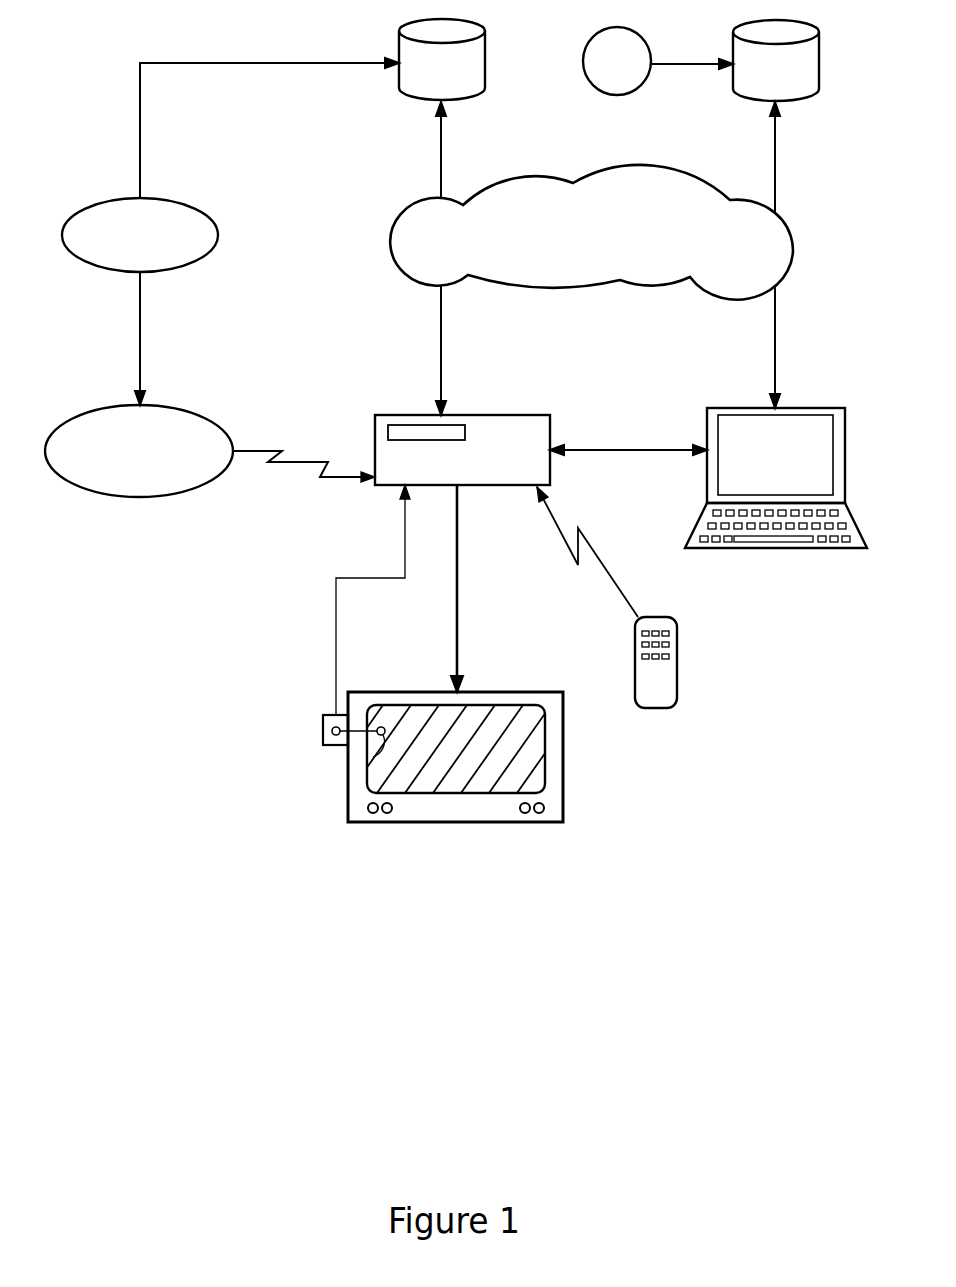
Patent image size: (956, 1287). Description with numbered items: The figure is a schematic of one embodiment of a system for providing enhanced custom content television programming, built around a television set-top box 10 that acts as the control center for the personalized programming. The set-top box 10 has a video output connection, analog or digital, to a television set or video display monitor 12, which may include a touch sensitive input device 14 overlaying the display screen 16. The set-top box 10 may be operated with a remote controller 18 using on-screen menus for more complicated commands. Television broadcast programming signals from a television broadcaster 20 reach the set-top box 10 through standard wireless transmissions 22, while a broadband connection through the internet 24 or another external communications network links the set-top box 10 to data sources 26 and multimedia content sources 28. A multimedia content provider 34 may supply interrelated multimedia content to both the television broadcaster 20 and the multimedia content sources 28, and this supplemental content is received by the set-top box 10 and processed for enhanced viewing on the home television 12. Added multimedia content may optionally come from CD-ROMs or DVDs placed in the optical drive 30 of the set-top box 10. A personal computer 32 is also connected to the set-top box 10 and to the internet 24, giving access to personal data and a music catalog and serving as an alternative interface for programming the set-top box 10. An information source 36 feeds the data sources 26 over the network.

The television set-top box 10 is at (552, 427).
The television set or video display monitor 12 is at (565, 785).
The touch sensitive input device 14 is at (323, 729).
The display screen 16 is at (369, 758).
The remote controller 18 is at (678, 667).
The television broadcaster 20 is at (184, 496).
The wireless transmissions 22 is at (284, 463).
The internet 24 is at (581, 244).
The data sources 26 is at (821, 48).
The multimedia content sources 28 is at (486, 38).
The optical drive 30 is at (403, 425).
The laptop computer 32 is at (815, 550).
The multimedia content provider 34 is at (184, 271).
The information source 36 is at (619, 96).